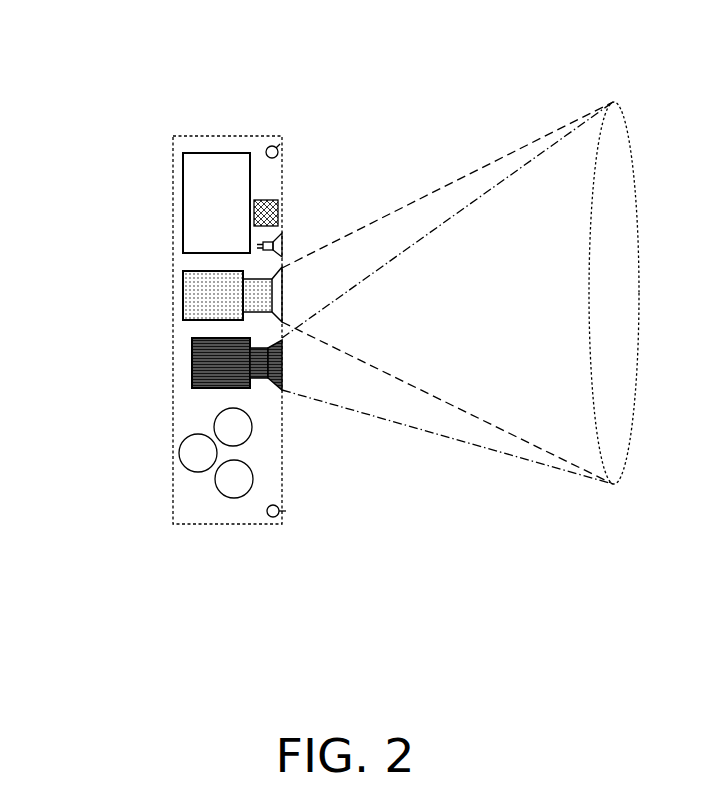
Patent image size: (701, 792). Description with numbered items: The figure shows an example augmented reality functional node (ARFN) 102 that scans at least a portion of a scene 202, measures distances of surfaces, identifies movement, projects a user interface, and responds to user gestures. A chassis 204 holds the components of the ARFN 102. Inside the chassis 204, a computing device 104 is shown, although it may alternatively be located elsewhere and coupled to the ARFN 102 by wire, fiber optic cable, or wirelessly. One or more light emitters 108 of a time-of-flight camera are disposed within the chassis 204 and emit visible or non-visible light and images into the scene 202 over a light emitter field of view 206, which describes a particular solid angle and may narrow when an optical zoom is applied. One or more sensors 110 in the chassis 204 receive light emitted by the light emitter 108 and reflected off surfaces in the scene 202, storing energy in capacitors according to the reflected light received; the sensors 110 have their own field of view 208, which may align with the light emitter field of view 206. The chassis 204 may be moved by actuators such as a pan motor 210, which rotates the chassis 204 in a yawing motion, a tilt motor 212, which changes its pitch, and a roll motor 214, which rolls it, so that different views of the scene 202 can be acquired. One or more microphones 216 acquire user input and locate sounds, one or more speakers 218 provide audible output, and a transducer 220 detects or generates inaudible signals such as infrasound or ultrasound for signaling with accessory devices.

The augmented reality functional node (ARFN) 102 is at (192, 136).
The computing device 104 is at (183, 187).
The light emitter 108 is at (183, 295).
The sensors 110 is at (192, 368).
The scene 202 is at (614, 293).
The chassis 204 is at (228, 136).
The light emitter field of view 206 is at (452, 182).
The field of view 208 is at (414, 428).
The pan motor 210 is at (214, 430).
The tilt motor 212 is at (181, 466).
The roll motor 214 is at (218, 487).
The microphones 216 is at (282, 145).
The speakers 218 is at (282, 243).
The transducer 220 is at (282, 197).